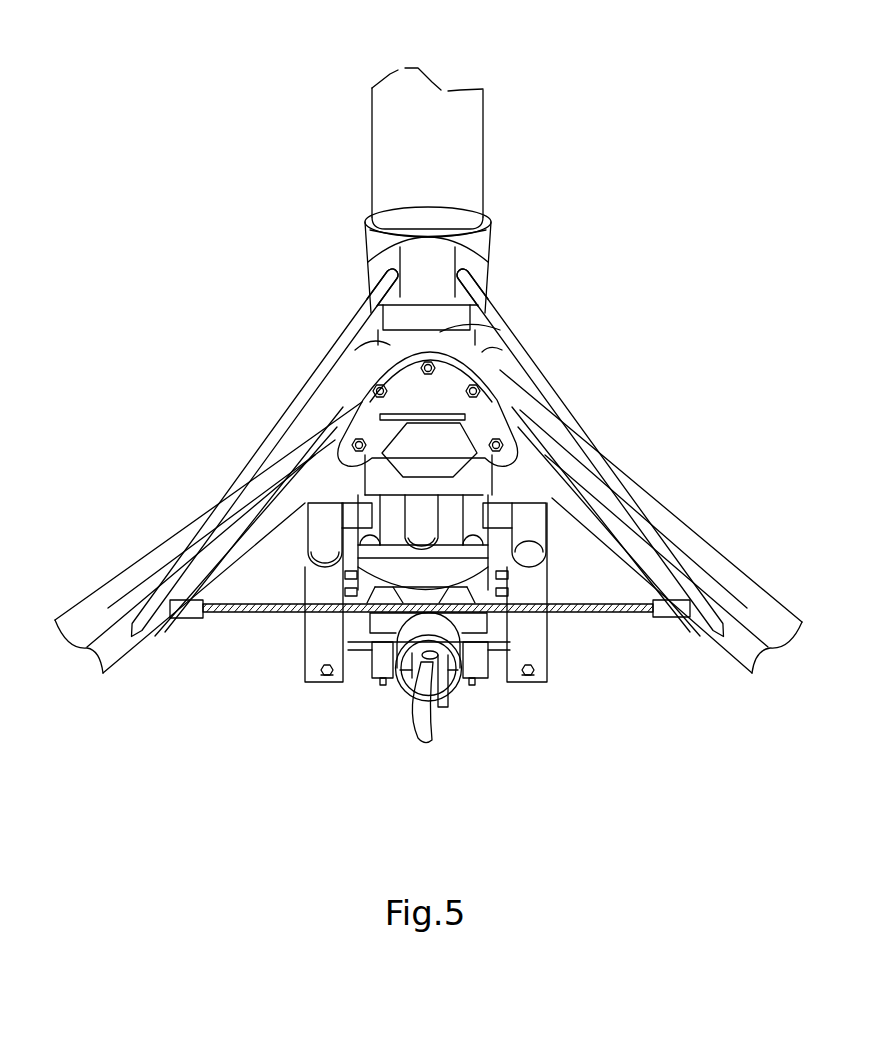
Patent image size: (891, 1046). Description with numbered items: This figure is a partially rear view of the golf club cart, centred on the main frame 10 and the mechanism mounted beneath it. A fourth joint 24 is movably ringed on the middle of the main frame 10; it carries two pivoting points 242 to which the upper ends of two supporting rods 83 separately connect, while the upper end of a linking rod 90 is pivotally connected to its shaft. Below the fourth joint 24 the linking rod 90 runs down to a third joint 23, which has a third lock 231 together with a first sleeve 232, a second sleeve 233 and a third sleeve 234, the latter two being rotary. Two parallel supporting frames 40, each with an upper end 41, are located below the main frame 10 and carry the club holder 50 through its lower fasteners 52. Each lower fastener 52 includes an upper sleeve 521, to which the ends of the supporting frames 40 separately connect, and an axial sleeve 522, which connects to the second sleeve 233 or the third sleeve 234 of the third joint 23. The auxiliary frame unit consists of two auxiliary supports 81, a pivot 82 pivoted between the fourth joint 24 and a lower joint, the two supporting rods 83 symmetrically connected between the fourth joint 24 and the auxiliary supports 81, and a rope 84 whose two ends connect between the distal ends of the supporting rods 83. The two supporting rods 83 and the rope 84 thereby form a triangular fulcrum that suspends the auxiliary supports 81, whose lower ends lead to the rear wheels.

The main frame 10 is at (463, 165).
The fourth joint 24 is at (490, 235).
The pivoting points 242 is at (370, 273).
The pivot 82 is at (443, 332).
The supporting rods 83 is at (311, 405).
The linking rod 90 is at (440, 513).
The supporting frames 40 is at (431, 503).
The upper end 41 is at (320, 560).
The auxiliary supports 81 is at (127, 562).
The upper sleeve 521 is at (328, 580).
The lower fastener 52 is at (318, 638).
The club holder 50 is at (391, 651).
The rope 84 is at (603, 612).
The axial sleeve 522 is at (362, 677).
The third sleeve 234 is at (382, 667).
The second sleeve 233 is at (485, 668).
The first sleeve 232 is at (437, 628).
The third lock 231 is at (433, 715).
The third joint 23 is at (427, 714).